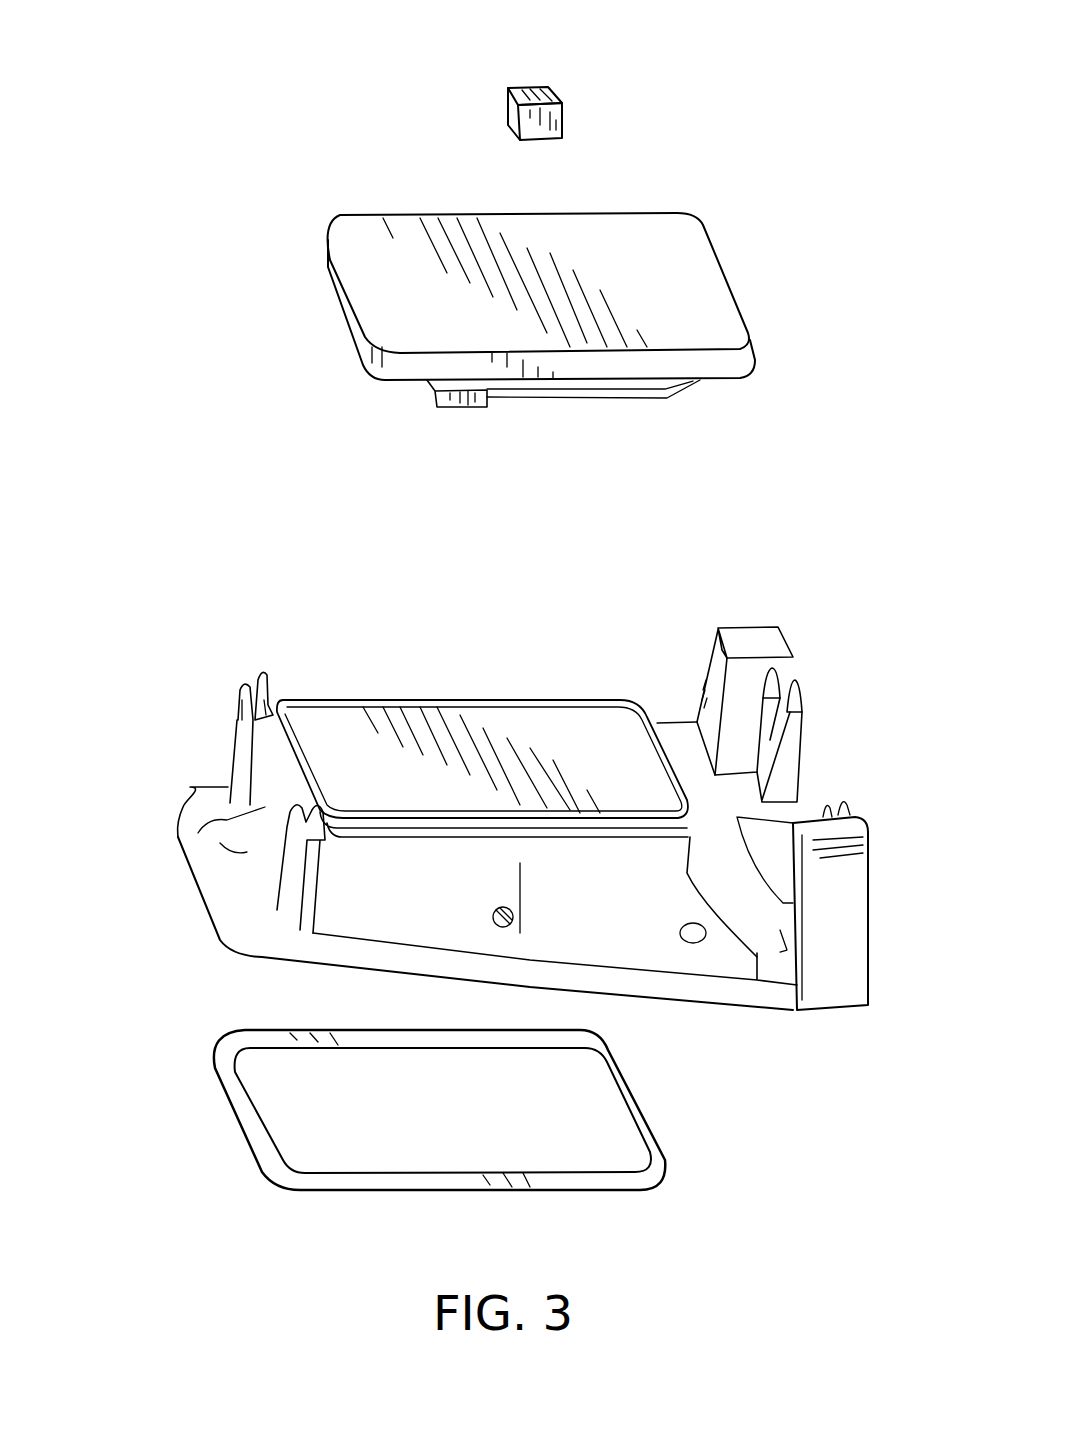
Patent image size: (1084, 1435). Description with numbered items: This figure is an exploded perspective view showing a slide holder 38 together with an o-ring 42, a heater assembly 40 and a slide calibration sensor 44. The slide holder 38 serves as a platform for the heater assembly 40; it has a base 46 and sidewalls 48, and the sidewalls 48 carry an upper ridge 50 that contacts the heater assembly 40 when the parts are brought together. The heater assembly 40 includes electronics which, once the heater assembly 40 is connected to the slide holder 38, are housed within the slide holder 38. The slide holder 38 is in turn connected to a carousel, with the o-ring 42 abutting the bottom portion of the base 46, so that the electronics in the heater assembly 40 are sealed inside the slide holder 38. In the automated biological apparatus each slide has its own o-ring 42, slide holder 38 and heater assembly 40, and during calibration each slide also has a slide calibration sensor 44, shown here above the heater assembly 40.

The slide holder 38 is at (528, 817).
The heater assembly 40 is at (772, 282).
The o-ring 42 is at (660, 1147).
The slide calibration sensor 44 is at (540, 87).
The base 46 is at (247, 933).
The sidewalls 48 is at (378, 888).
The upper ridge 50 is at (640, 827).